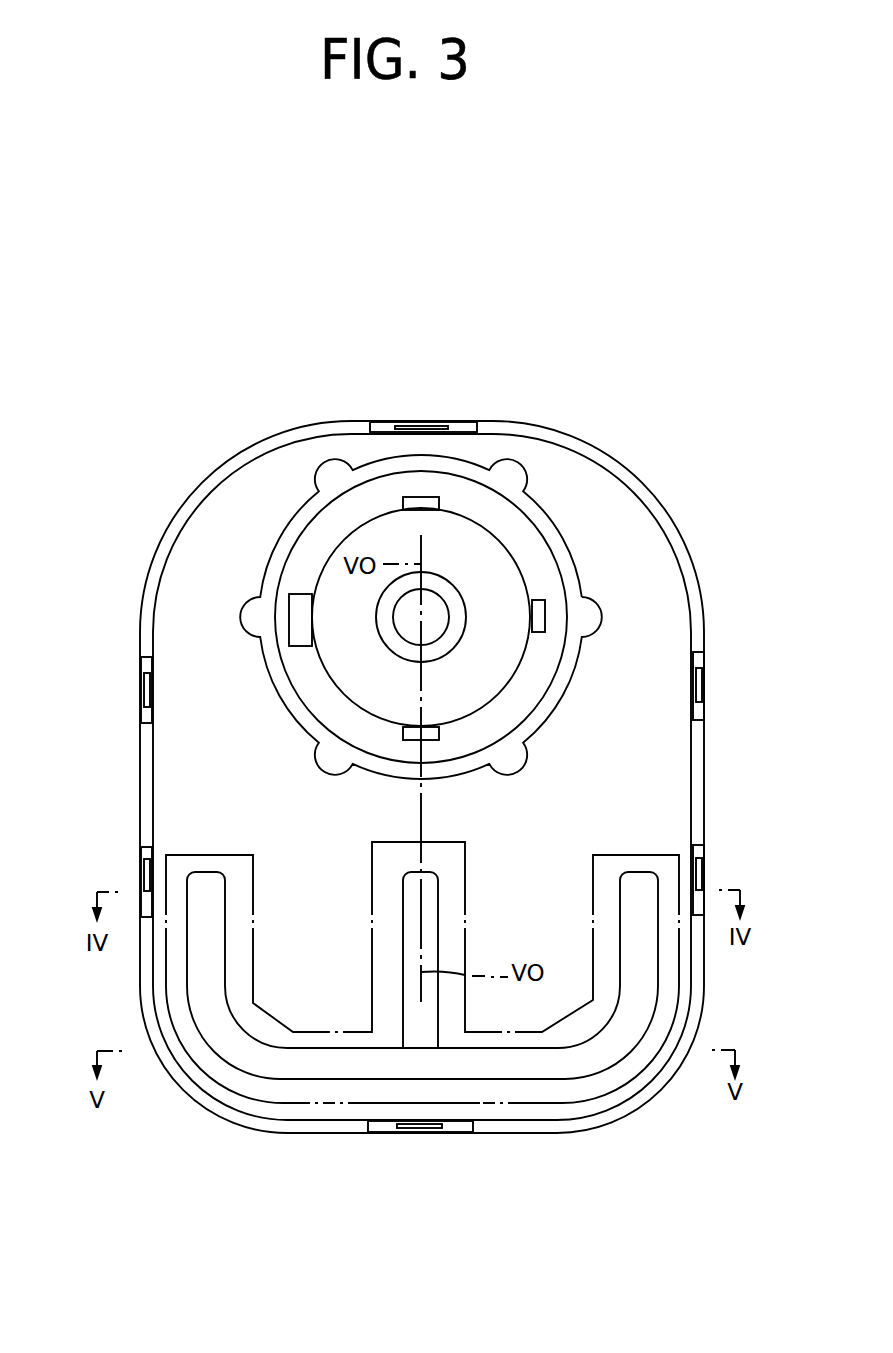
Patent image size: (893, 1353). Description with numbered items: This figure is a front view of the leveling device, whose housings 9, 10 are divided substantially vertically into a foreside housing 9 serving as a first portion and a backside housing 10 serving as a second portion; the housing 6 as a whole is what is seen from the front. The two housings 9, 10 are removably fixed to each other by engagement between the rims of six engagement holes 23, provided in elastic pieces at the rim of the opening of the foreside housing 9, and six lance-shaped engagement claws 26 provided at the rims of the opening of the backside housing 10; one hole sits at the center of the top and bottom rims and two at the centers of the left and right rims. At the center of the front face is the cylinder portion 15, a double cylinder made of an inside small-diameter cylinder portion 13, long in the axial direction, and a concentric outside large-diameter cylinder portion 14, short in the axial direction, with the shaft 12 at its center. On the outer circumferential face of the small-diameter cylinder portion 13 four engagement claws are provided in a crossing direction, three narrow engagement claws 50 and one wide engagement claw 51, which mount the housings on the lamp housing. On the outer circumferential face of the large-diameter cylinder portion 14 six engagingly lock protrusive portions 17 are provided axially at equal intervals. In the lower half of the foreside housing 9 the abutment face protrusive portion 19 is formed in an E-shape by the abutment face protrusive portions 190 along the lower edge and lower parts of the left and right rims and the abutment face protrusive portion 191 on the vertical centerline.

The housing 6 is at (182, 500).
The foreside housing 9 is at (607, 460).
The backside housing 10 is at (422, 777).
The rotary shaft 12 is at (445, 630).
The small-diameter cylinder portion 13 is at (525, 575).
The large-diameter cylinder portion 14 is at (558, 518).
The cylinder portion 15 is at (718, 447).
The engagingly lock protrusive portion 17 is at (331, 464).
The abutment face protrusive portion 19 is at (588, 1206).
The engagement hole 23 is at (430, 423).
The engagement claw 26 is at (393, 427).
The engagement claw 50 is at (421, 497).
The engagement claw 51 is at (288, 637).
The abutment face protrusive portion 190 is at (632, 990).
The abutment face protrusive portion 191 is at (425, 1015).